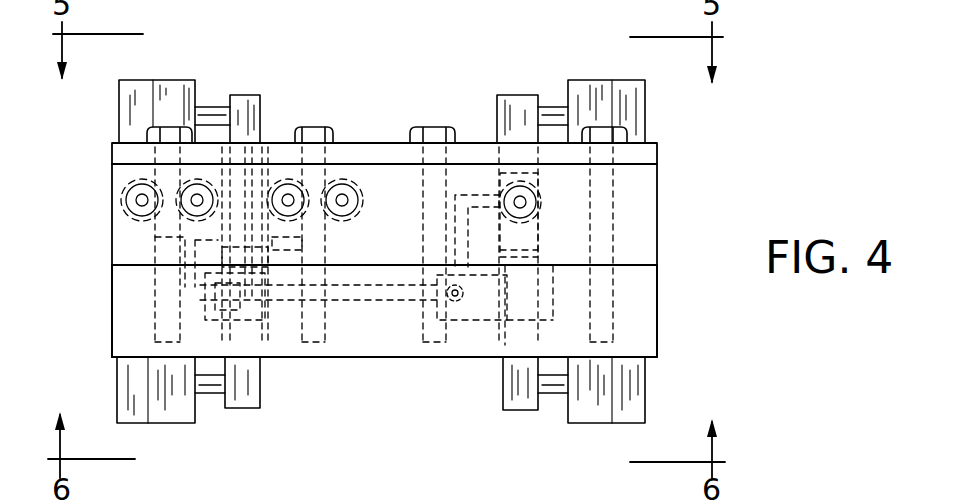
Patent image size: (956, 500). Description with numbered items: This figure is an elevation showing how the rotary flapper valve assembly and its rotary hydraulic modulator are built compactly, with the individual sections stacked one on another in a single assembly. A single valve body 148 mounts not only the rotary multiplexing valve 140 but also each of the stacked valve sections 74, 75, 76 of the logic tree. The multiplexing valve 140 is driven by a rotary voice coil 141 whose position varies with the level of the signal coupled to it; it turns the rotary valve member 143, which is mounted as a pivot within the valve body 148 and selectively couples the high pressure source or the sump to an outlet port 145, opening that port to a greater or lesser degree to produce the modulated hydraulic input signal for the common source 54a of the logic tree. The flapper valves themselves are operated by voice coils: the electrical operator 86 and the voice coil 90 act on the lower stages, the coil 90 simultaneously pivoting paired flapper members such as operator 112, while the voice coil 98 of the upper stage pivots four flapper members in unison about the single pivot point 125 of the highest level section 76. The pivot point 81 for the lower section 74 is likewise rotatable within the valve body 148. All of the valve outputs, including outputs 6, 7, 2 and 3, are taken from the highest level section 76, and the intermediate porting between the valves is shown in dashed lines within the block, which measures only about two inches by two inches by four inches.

The voice coil 98 is at (177, 79).
The pivot point 125 is at (250, 94).
The rotary valve member 143 is at (515, 94).
The rotary voice coil 141 is at (608, 79).
The rotary valve 140 is at (676, 165).
The highest level valve section 76 is at (96, 175).
The valve section 75 is at (96, 300).
The valve section 74 is at (674, 300).
The flapper valve operator 112 is at (79, 311).
The valve body 148 is at (372, 360).
The voice coil 90 is at (192, 425).
The pivot point 81 is at (533, 412).
The electrical operator 86 is at (620, 426).
The outlet port 145 is at (500, 195).
The modulated source 54a is at (455, 230).
The valve output 6 is at (134, 186).
The valve output 7 is at (194, 186).
The valve output 2 is at (294, 176).
The valve output 3 is at (348, 186).